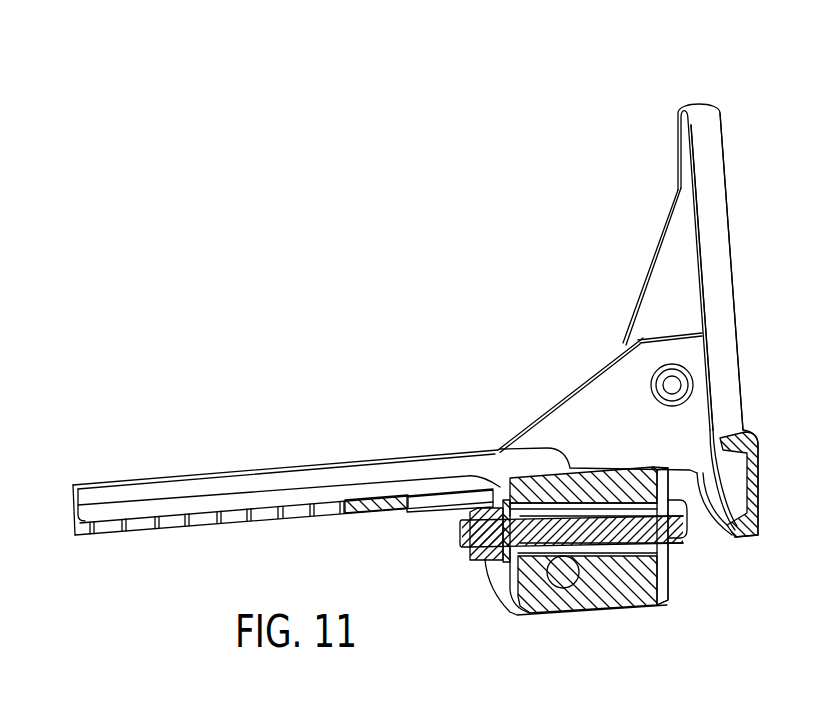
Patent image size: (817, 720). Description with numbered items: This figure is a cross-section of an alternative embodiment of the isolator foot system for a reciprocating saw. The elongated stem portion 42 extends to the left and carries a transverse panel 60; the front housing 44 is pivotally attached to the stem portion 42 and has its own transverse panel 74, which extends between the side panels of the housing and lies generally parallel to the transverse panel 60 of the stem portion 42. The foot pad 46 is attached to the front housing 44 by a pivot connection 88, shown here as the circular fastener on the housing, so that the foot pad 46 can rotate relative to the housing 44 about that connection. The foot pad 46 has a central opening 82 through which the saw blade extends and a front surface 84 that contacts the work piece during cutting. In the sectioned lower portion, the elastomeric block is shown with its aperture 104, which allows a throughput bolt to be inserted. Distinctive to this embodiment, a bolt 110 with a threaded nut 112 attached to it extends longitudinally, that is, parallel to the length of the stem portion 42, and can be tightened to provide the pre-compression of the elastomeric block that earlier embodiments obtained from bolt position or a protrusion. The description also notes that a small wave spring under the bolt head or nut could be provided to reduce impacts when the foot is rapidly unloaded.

The stem portion 42 is at (183, 478).
The front housing 44 is at (563, 393).
The foot pad 46 is at (718, 321).
The transverse panel 60 is at (518, 580).
The transverse panel 74 is at (667, 560).
The central opening 82 is at (710, 193).
The front surface 84 is at (733, 260).
The pivot connection 88 is at (670, 383).
The aperture 104 is at (570, 588).
The bolt 110 is at (617, 523).
The threaded nut 112 is at (485, 556).